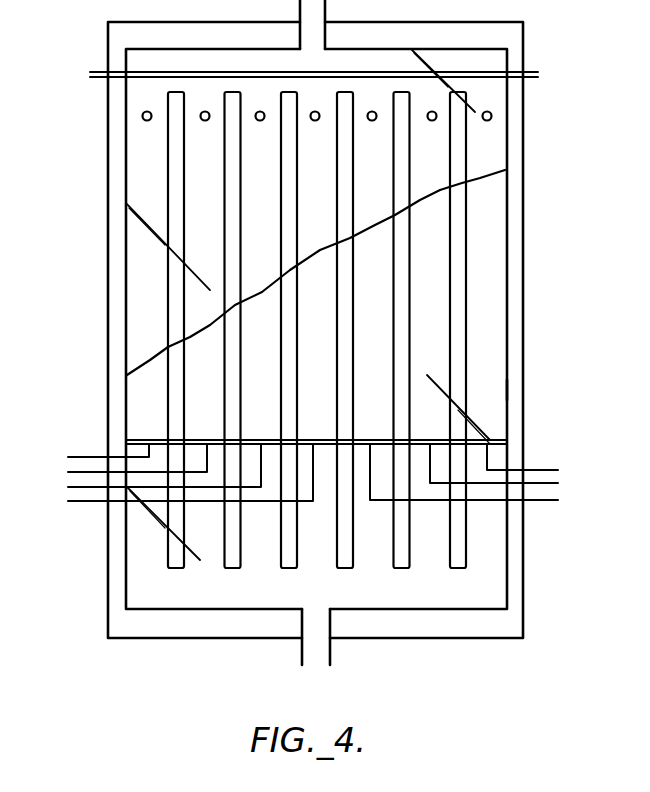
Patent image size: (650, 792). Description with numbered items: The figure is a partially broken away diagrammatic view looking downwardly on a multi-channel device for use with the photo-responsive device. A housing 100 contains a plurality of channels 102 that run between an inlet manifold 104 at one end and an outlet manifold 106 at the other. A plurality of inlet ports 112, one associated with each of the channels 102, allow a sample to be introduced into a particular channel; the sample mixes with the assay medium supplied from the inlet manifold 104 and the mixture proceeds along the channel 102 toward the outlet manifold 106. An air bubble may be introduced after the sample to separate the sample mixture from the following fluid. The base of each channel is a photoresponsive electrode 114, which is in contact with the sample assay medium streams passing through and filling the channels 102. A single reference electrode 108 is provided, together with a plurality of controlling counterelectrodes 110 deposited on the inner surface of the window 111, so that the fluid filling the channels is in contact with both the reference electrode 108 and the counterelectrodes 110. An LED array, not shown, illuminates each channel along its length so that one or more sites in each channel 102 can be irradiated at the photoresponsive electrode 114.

The housing 100 is at (520, 324).
The channels 102 is at (144, 164).
The inlet manifold 104 is at (488, 63).
The outlet manifold 106 is at (487, 592).
The reference electrode 108 is at (532, 78).
The controlling counterelectrodes 110 is at (88, 502).
The window 111 is at (487, 396).
The inlet ports 112 is at (142, 116).
The photoresponsive electrode 114 is at (273, 192).